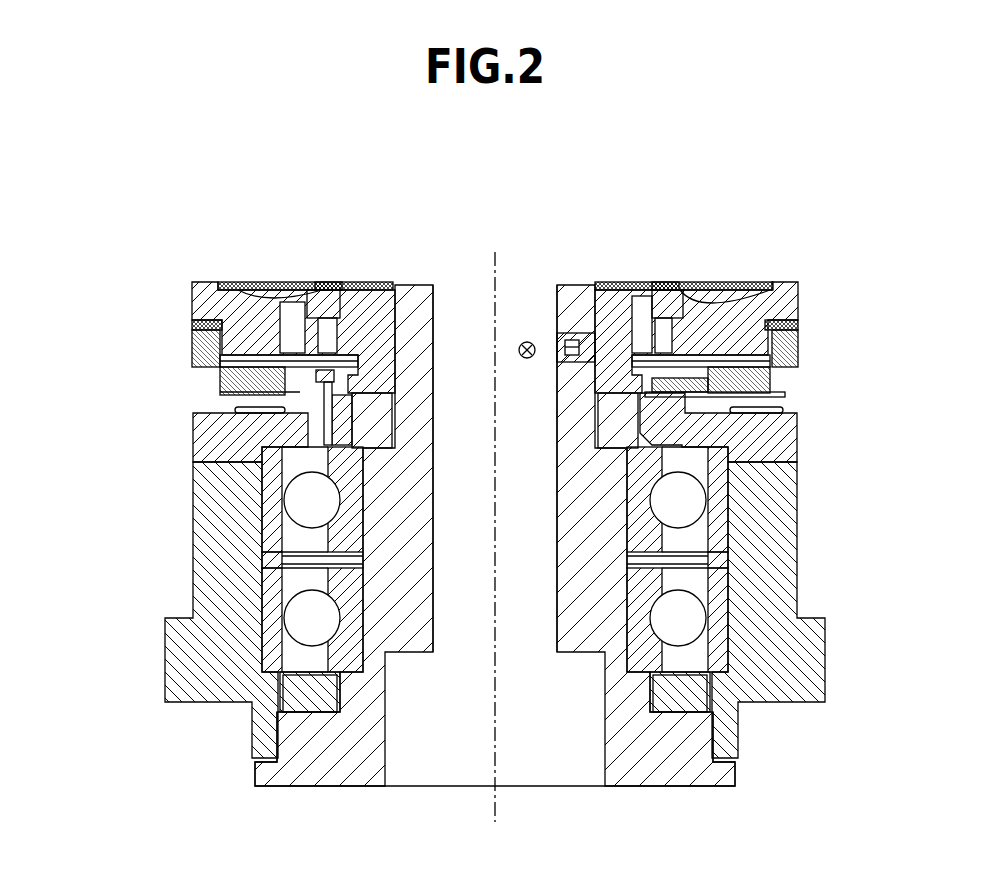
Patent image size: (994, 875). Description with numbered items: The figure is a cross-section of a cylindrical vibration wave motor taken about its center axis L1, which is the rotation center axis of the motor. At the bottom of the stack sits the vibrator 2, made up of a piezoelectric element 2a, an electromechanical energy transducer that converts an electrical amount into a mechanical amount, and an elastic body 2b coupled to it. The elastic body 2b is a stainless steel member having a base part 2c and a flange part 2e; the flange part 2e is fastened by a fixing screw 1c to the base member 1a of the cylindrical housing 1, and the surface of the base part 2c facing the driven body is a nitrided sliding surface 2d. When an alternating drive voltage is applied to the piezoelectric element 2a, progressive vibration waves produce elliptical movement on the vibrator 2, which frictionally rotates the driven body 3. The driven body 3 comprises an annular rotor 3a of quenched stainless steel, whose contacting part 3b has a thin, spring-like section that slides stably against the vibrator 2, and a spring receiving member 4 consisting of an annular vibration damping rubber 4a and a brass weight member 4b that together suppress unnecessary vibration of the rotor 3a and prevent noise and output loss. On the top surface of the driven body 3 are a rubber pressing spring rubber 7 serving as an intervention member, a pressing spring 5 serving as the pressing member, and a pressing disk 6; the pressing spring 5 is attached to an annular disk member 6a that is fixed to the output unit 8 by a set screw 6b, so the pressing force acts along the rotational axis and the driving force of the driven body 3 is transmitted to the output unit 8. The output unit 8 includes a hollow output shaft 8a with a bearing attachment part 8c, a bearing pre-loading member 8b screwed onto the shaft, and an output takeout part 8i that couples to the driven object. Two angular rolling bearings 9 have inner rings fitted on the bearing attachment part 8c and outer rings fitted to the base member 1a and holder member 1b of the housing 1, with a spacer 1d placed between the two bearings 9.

The housing 1 is at (448, 564).
The base member 1a is at (222, 443).
The holder member 1b is at (213, 495).
The fixing screw 1c is at (308, 420).
The spacer 1d is at (421, 552).
The vibrator 2 is at (796, 367).
The piezoelectric element 2a is at (775, 403).
The elastic body 2b is at (809, 348).
The base part 2c is at (773, 378).
The sliding surface 2d is at (796, 358).
The flange part 2e is at (812, 325).
The driven body 3 is at (212, 320).
The rotor 3a is at (200, 348).
The contacting part 3b is at (222, 380).
The spring receiving member 4 is at (231, 288).
The vibration damping rubber 4a is at (193, 323).
The weight member 4b is at (193, 283).
The pressing spring 5 is at (713, 282).
The pressing disk 6 is at (658, 279).
The disk member 6a is at (630, 283).
The set screw 6b is at (535, 342).
The pressing spring rubber 7 is at (760, 285).
The output unit 8 is at (552, 516).
The output shaft 8a is at (415, 283).
The bearing pre-loading member 8b is at (445, 290).
The bearing attachment part 8c is at (607, 557).
The output takeout part 8i is at (688, 787).
The rolling bearing 9 is at (722, 515).
The center axis L1 is at (490, 806).